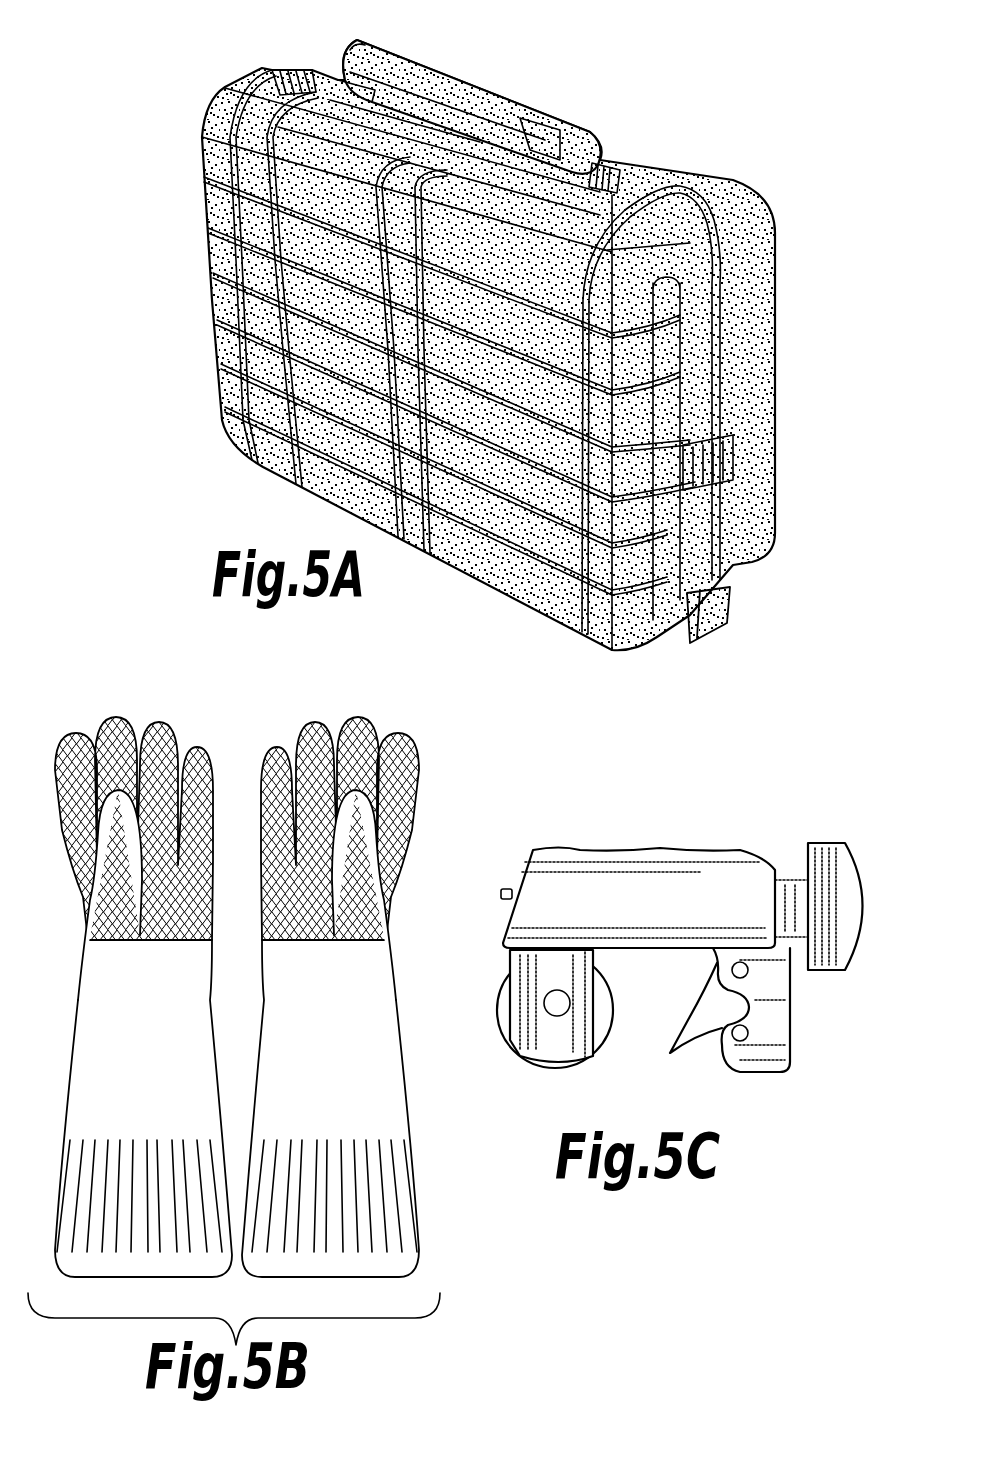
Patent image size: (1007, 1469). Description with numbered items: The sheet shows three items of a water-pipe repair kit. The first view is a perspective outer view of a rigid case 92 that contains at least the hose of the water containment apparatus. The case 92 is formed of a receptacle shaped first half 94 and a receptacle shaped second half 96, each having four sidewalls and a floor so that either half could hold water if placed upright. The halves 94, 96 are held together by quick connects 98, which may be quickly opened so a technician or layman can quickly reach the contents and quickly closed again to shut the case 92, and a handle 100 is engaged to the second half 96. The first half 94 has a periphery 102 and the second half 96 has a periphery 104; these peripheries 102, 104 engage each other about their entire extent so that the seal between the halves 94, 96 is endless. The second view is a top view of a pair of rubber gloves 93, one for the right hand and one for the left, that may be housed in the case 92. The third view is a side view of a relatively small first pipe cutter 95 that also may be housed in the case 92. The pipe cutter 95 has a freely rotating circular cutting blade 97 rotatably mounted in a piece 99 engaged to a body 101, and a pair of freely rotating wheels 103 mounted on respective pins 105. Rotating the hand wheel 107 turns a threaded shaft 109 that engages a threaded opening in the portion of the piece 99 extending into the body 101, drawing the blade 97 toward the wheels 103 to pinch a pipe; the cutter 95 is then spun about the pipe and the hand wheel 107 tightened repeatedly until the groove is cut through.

In FIG. 5A, the case 92 is at (471, 362).
In FIG. 5B, the pair of rubber gloves 93 is at (200, 722).
In FIG. 5A, the receptacle shaped first half 94 is at (230, 455).
In FIG. 5C, the first pipe cutter 95 is at (658, 923).
In FIG. 5A, the receptacle shaped second half 96 is at (760, 287).
In FIG. 5C, the circular cutting blade 97 is at (613, 1013).
In FIG. 5A, the quick connects 98 is at (292, 78).
In FIG. 5C, the piece 99 is at (517, 1043).
In FIG. 5A, the handle 100 is at (492, 50).
In FIG. 5C, the body 101 is at (573, 850).
In FIG. 5A, the periphery 102 is at (687, 595).
In FIG. 5C, the freely rotating wheels 103 is at (710, 1030).
In FIG. 5A, the periphery 104 is at (700, 250).
In FIG. 5C, the pins 105 is at (750, 1030).
In FIG. 5C, the hand wheel 107 is at (830, 843).
In FIG. 5C, the threaded shaft 109 is at (505, 890).